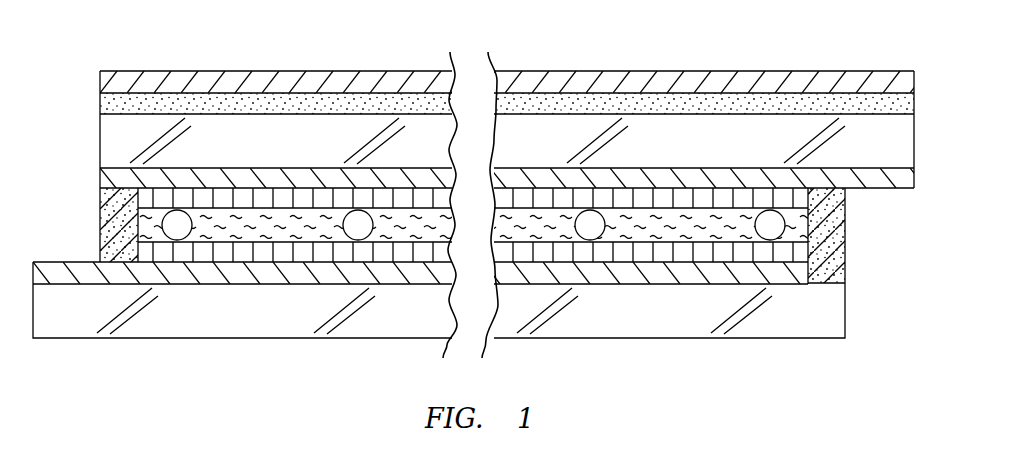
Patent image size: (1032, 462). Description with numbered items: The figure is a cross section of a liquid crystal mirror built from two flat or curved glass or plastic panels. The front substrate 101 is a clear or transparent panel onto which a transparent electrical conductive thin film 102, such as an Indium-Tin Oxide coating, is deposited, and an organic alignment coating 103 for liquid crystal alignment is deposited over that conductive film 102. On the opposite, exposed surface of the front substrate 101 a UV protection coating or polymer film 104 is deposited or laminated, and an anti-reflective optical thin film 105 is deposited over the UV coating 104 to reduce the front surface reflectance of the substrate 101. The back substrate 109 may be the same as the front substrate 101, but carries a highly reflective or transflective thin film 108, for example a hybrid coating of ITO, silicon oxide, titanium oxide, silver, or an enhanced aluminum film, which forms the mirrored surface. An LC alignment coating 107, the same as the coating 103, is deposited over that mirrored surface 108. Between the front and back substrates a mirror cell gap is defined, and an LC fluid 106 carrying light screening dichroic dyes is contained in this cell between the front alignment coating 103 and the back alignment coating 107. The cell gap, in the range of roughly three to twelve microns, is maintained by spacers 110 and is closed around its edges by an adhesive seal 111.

The front substrate 101 is at (750, 143).
The transparent electrical conductive thin film 102 is at (847, 180).
The organic alignment coating 103 is at (671, 200).
The UV protection coating 104 is at (360, 107).
The AR optical thin film 105 is at (263, 80).
The LC fluid 106 is at (283, 232).
The LC alignment coating 107 is at (392, 255).
The reflective or transflective thin film 108 is at (733, 273).
The back substrate 109 is at (613, 310).
The spacers 110 is at (592, 213).
The adhesive seal 111 is at (113, 220).